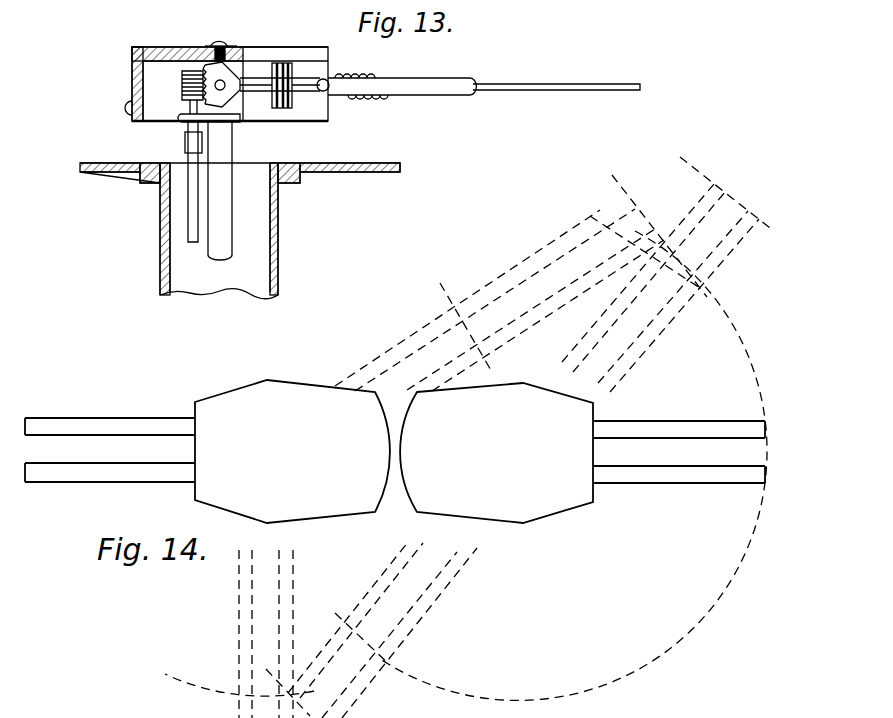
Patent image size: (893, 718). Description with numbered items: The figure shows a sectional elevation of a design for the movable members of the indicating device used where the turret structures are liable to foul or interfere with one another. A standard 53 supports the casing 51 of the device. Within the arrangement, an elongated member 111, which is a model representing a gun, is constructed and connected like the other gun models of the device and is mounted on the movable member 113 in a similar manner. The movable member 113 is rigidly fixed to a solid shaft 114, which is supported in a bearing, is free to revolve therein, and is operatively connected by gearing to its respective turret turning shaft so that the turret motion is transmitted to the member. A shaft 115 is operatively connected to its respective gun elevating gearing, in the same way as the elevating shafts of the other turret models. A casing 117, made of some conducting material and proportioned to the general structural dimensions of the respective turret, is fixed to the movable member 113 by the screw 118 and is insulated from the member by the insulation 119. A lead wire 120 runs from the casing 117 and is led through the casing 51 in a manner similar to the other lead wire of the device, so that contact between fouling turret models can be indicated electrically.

The casing 51 is at (366, 172).
The standard 53 is at (279, 222).
The elongated member 111 is at (467, 85).
The movable member 113 is at (243, 107).
The solid shaft 114 is at (227, 182).
The shaft 115 is at (192, 177).
The casing 117 is at (132, 57).
The screw 118 is at (218, 43).
The insulation 119 is at (235, 47).
The lead wire 120 is at (132, 126).